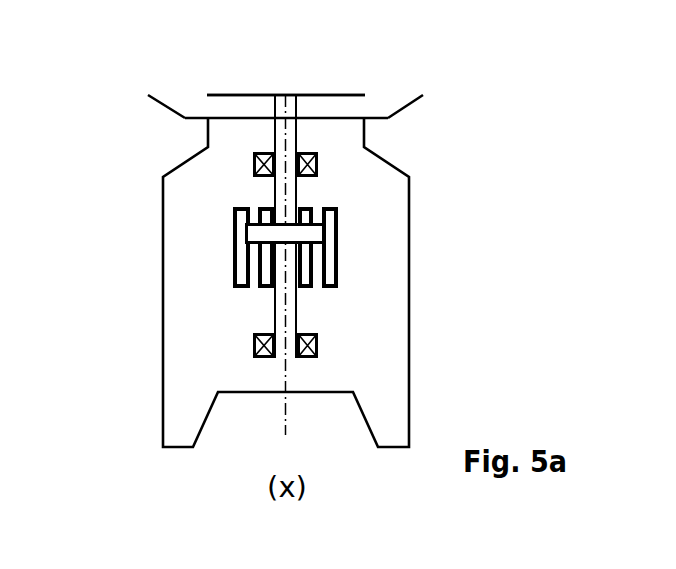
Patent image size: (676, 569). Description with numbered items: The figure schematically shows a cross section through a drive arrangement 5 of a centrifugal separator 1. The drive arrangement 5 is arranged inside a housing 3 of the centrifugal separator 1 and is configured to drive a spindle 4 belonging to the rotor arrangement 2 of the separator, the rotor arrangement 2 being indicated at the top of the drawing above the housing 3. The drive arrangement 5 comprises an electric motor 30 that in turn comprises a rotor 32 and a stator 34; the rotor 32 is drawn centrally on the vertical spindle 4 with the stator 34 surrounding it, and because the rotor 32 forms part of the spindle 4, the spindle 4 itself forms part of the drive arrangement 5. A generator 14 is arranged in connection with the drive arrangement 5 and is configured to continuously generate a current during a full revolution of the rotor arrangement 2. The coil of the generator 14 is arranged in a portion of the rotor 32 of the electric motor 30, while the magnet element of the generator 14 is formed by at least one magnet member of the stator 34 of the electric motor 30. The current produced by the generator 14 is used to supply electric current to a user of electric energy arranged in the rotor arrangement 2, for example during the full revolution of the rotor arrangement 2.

The centrifugal separator 1 is at (462, 172).
The rotor arrangement 2 is at (408, 67).
The housing 3 is at (163, 205).
The spindle 4 is at (275, 112).
The drive arrangement 5 is at (243, 245).
The generator 14 is at (310, 237).
The electric motor 30 is at (252, 303).
The rotor 32 is at (302, 280).
The stator 34 is at (331, 288).